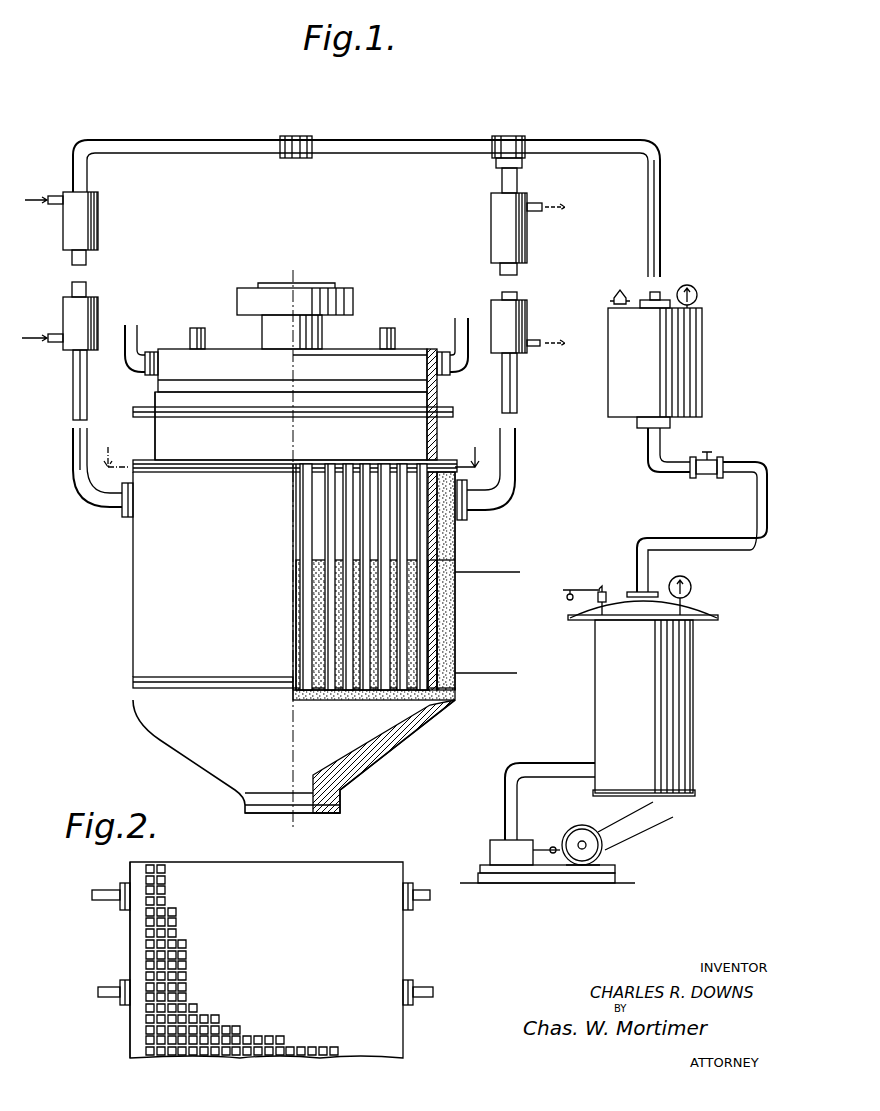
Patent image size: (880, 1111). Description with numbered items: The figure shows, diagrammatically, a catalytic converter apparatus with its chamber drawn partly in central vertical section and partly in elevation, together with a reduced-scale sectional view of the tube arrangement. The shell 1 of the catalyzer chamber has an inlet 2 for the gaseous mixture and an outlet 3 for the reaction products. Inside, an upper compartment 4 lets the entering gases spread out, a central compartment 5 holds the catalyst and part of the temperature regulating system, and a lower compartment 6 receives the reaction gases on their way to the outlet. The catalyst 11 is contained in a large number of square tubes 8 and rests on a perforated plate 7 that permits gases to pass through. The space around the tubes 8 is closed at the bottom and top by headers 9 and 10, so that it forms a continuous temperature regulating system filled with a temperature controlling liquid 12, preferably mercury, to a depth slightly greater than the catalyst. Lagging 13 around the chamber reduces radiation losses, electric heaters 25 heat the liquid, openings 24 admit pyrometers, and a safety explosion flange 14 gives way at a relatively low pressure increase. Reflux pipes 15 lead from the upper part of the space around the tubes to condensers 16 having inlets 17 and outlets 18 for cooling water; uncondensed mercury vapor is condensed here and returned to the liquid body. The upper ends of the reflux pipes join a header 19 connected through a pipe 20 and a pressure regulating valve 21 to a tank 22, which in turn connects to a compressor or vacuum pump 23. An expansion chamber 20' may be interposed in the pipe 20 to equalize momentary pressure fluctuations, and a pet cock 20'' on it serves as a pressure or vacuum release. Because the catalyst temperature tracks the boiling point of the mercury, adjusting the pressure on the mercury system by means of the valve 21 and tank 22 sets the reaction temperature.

In FIG. 1, the shell of the converter or catalyzer chamber 1 is at (455, 621).
In FIG. 1, the inlet 2 is at (455, 325).
In FIG. 1, the outlet 3 is at (301, 800).
In FIG. 1, the upper compartment 4 is at (258, 426).
In FIG. 1, the central compartment 5 is at (293, 488).
In FIG. 1, the lower compartment 6 is at (294, 756).
In FIG. 1, the perforated plate 7 is at (353, 694).
In FIG. 1, the square tubes 8 is at (315, 528).
In FIG. 2, the square tubes 8 is at (166, 866).
In FIG. 1, the header 9 is at (460, 668).
In FIG. 1, the header 10 is at (378, 466).
In FIG. 2, the header 10 is at (140, 869).
In FIG. 1, the catalyst 11 is at (455, 573).
In FIG. 1, the temperature controlling liquid 12 is at (302, 563).
In FIG. 1, the lagging or heat insulating 13 is at (450, 596).
In FIG. 1, the safety explosion flange 14 is at (328, 292).
In FIG. 1, the reflux pipes 15 is at (76, 390).
In FIG. 2, the reflux pipes 15 is at (106, 985).
In FIG. 1, the condensers 16 is at (98, 236).
In FIG. 1, the inlets 17 is at (55, 333).
In FIG. 1, the outlets 18 is at (52, 204).
In FIG. 1, the header 19 is at (300, 140).
In FIG. 1, the pipe 20 is at (674, 218).
In FIG. 1, the expansion chamber 20' is at (676, 356).
In FIG. 1, the pet cock 20'' is at (614, 283).
In FIG. 1, the pressure regulating valve 21 is at (707, 478).
In FIG. 1, the tank 22 is at (604, 702).
In FIG. 1, the compressor or vacuum pump 23 is at (500, 850).
In FIG. 1, the openings for the introduction of pyrometers 24 is at (197, 328).
In FIG. 1, the electric heaters 25 is at (455, 641).